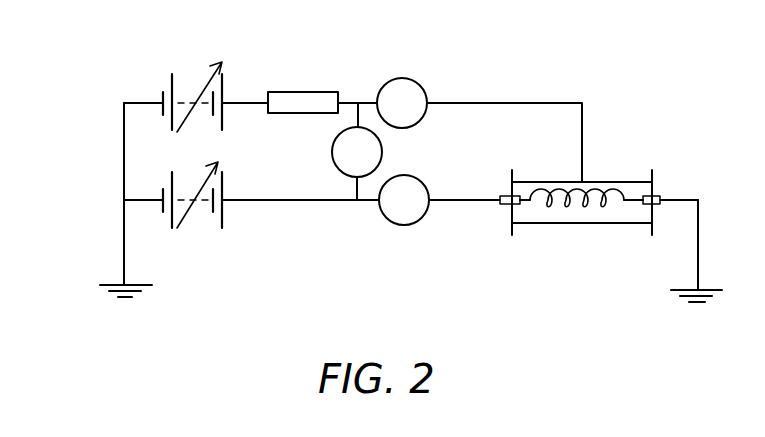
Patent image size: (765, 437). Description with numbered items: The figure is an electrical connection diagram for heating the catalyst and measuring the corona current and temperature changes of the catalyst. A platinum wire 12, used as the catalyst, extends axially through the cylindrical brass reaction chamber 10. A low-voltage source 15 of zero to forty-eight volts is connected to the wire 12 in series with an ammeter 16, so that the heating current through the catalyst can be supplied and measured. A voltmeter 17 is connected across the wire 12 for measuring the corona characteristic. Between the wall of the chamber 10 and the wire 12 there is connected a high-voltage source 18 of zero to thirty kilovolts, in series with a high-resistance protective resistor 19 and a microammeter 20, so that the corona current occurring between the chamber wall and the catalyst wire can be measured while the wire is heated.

The reaction chamber 10 is at (600, 182).
The platinum wire 12 is at (625, 196).
The voltage source 15 is at (190, 215).
The ammeter 16 is at (404, 225).
The voltmeter 17 is at (383, 150).
The high-voltage source 18 is at (188, 90).
The protective resistor 19 is at (301, 100).
The microammeter 20 is at (421, 86).